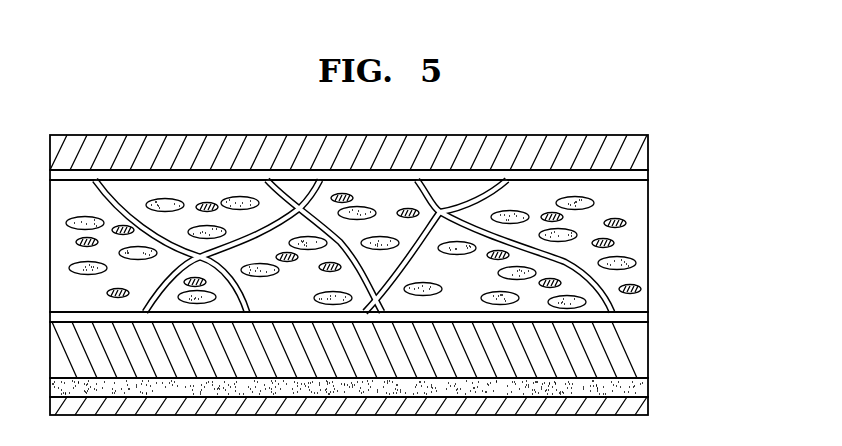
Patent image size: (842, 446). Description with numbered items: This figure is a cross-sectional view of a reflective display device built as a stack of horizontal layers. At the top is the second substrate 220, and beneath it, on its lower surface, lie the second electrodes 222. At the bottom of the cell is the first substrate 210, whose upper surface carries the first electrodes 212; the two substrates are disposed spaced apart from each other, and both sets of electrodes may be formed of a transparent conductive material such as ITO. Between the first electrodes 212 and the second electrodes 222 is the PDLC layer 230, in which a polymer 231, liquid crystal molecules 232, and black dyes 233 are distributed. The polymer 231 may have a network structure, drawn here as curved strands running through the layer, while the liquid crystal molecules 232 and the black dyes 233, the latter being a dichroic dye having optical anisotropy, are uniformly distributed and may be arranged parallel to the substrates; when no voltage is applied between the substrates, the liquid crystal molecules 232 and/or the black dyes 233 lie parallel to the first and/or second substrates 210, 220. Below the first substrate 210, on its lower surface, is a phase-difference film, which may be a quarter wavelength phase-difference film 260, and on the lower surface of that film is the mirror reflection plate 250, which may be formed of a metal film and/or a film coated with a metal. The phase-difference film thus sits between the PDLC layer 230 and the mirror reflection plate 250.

The second substrate 220 is at (648, 152).
The second electrodes 222 is at (648, 175).
The PDLC layer 230 is at (416, 246).
The polymer 231 is at (577, 262).
The liquid crystal molecules 232 is at (636, 263).
The black dyes 233 is at (641, 289).
The first electrodes 212 is at (648, 316).
The first substrate 210 is at (648, 350).
The ¼ wavelength phase-difference film 260 is at (648, 387).
The mirror reflection plate 250 is at (648, 405).